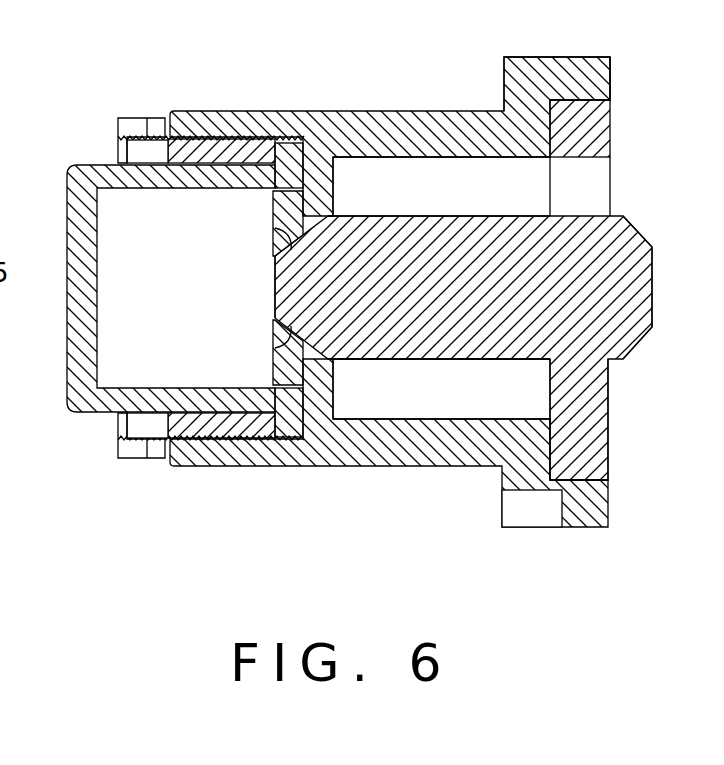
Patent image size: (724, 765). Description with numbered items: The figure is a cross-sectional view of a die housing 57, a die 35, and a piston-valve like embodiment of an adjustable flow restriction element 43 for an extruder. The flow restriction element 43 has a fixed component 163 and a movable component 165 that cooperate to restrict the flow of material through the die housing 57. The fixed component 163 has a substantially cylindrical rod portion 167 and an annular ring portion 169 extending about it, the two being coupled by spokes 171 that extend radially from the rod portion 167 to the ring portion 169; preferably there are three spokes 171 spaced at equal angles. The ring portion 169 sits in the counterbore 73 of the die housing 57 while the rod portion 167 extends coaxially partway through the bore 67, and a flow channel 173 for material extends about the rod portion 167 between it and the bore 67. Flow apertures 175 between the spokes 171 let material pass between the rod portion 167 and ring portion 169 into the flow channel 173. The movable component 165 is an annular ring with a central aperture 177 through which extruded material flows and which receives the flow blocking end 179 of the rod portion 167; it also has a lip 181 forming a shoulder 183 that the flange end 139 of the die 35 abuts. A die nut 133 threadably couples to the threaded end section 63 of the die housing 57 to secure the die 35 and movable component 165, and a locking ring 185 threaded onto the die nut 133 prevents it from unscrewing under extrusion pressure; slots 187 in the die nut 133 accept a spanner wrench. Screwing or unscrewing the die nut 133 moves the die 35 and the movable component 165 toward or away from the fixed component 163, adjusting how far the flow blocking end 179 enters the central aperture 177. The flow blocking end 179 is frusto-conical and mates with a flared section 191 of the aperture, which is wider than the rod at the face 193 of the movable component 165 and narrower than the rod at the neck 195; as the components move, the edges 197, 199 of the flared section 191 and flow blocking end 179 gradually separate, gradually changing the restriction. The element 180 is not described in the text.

The die 35 is at (68, 185).
The adjustable flow restriction element 43 is at (353, 296).
The die housing 57 is at (410, 120).
The threaded end section 63 is at (266, 111).
The bore 67 is at (373, 157).
The counterbore 73 is at (593, 97).
The die nut 133 is at (228, 152).
The flange end 139 is at (262, 440).
The fixed component 163 is at (643, 304).
The movable component 165 is at (283, 214).
The rod portion 167 is at (478, 322).
The ring portion 169 is at (612, 129).
The spokes 171 is at (580, 400).
The flow channel 173 is at (500, 180).
The flow apertures 175 is at (596, 201).
The central aperture 177 is at (287, 345).
The flow blocking end 179 is at (290, 300).
The retainer 180 is at (134, 452).
The lip 181 is at (335, 410).
The shoulder 183 is at (289, 440).
The locking ring 185 is at (155, 130).
The slots 187 is at (140, 420).
The flared section 191 is at (335, 216).
The face 193 is at (335, 195).
The neck 195 is at (277, 252).
The edge 197 is at (335, 362).
The edge 199 is at (287, 320).